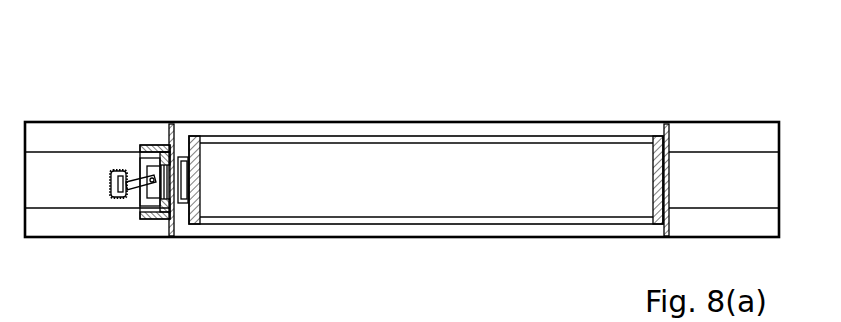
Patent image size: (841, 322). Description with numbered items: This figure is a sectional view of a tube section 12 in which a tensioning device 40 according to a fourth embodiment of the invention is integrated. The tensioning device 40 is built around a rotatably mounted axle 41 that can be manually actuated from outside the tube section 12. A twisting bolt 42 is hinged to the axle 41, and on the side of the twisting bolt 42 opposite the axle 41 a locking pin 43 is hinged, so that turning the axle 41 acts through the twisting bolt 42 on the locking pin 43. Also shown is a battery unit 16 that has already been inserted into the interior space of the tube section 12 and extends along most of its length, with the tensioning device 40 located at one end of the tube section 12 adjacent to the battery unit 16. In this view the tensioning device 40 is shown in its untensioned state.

The tube section 12 is at (317, 100).
The battery unit 16 is at (495, 226).
The tensioning device 40 is at (113, 147).
The axle 41 is at (105, 181).
The twisting bolt 42 is at (113, 190).
The locking pin 43 is at (138, 190).